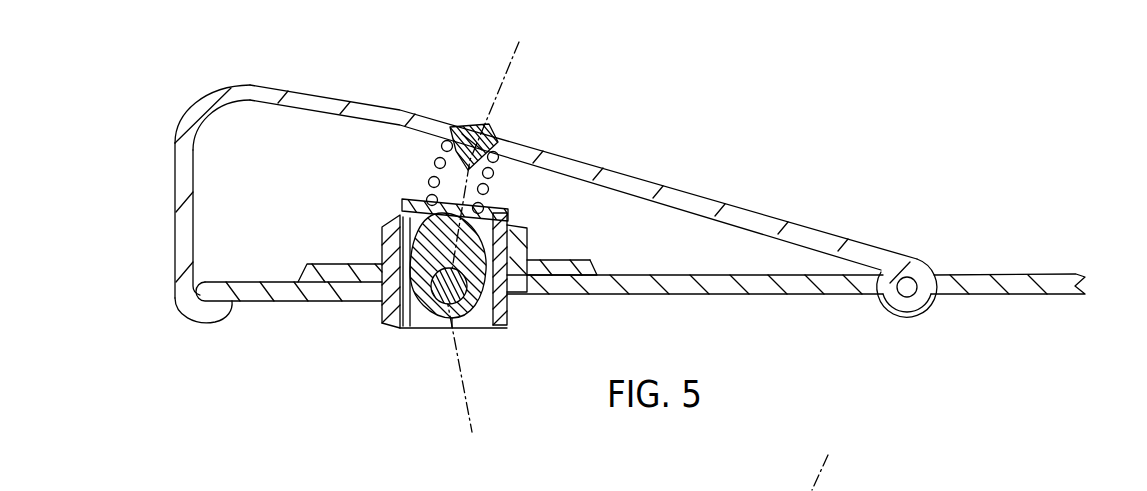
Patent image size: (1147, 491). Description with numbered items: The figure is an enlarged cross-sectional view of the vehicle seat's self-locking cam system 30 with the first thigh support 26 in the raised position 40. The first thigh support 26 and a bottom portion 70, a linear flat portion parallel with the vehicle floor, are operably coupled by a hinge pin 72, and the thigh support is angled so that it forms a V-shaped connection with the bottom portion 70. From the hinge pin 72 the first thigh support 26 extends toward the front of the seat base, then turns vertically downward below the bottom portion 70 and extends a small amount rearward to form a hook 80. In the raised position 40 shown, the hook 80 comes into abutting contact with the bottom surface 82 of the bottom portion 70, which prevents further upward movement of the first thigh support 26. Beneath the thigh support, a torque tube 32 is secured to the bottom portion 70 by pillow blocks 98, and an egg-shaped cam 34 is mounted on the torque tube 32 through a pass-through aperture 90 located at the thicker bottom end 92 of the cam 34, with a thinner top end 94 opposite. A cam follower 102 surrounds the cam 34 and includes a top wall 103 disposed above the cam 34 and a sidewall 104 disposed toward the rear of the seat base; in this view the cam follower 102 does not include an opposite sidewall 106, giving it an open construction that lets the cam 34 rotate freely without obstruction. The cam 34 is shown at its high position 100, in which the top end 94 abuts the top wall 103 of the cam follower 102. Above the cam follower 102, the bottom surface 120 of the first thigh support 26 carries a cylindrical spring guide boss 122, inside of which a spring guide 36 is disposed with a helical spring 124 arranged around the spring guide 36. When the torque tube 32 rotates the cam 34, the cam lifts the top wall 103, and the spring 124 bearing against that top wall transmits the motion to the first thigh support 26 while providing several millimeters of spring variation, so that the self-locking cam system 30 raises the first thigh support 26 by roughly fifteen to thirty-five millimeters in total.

The first thigh support 26 is at (580, 160).
The self-locking cam system 30 is at (818, 162).
The torque tube 32 is at (443, 304).
The cam 34 is at (414, 322).
The spring guide 36 is at (492, 130).
The raised position 40 is at (253, 352).
The bottom portion 70 is at (647, 289).
The hinge pin 72 is at (908, 287).
The hook 80 is at (218, 318).
The bottom surface 82 is at (570, 296).
The pass-through aperture 90 is at (476, 321).
The bottom end 92 is at (455, 323).
The top end 94 is at (487, 216).
The pillow block 98 is at (588, 262).
The high position 100 is at (382, 309).
The cam follower 102 is at (515, 258).
The top wall 103 is at (422, 200).
The sidewall 104 is at (533, 262).
The opposite sidewall 106 is at (396, 310).
The bottom surface 120 is at (347, 116).
The spring guide boss 122 is at (444, 138).
The spring 124 is at (500, 155).